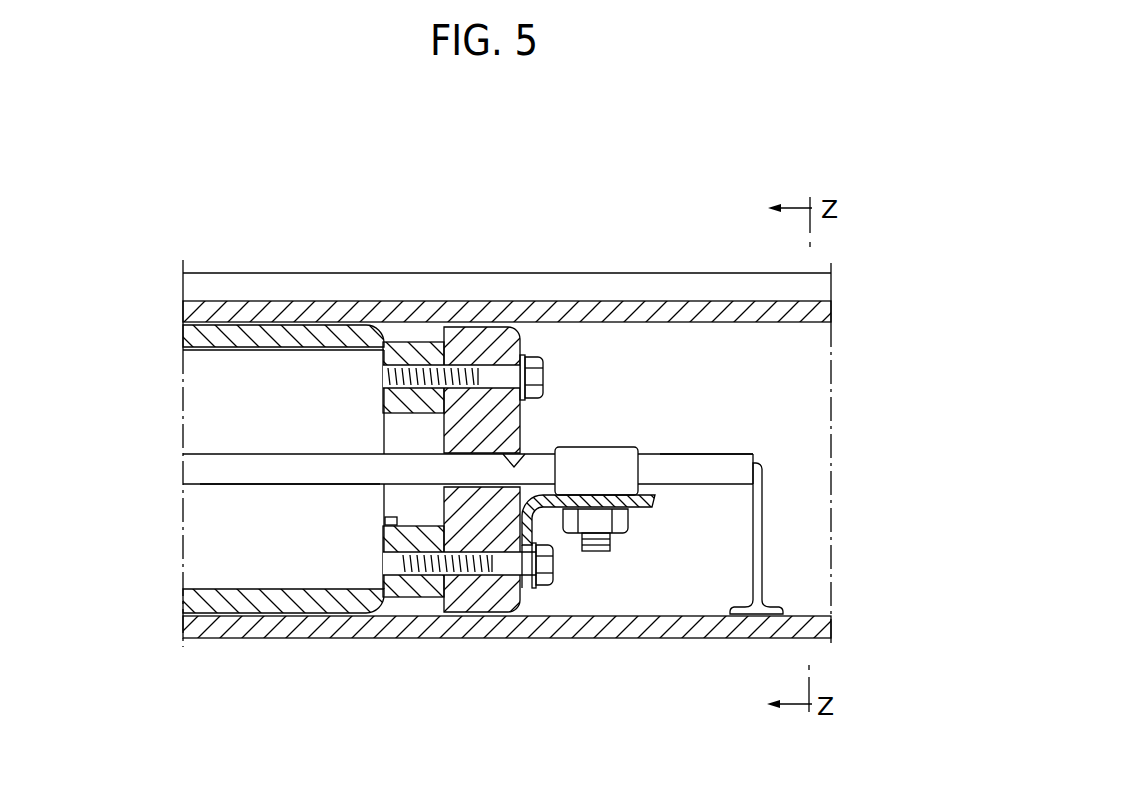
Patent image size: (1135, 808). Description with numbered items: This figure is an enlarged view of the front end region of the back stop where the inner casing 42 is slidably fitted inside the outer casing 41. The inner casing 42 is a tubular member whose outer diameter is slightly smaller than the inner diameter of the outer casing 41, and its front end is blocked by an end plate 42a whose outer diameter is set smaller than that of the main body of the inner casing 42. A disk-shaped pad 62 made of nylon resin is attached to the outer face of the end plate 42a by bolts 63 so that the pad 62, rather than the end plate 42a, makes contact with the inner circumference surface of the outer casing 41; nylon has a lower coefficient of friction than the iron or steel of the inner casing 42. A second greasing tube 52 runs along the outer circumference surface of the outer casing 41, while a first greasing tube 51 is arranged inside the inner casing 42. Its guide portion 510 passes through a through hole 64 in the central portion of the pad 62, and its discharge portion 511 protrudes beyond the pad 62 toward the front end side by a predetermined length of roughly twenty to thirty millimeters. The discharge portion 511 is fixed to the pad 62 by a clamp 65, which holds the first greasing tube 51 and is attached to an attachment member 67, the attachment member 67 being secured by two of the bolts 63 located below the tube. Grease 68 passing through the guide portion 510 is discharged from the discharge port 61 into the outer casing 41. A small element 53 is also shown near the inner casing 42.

The outer casing 41 is at (645, 628).
The inner casing 42 is at (298, 600).
The end plate 42a is at (408, 590).
The first greasing tube 51 is at (297, 463).
The guide portion 510 is at (328, 475).
The discharge portion 511 is at (700, 453).
The second greasing tube 52 is at (437, 283).
The key 53 is at (388, 519).
The discharge port 61 is at (770, 529).
The pad 62 is at (478, 597).
The bolts 63 is at (544, 377).
The through hole 64 is at (520, 459).
The clamp 65 is at (617, 458).
The attachment member 67 is at (644, 509).
The grease 68 is at (760, 542).